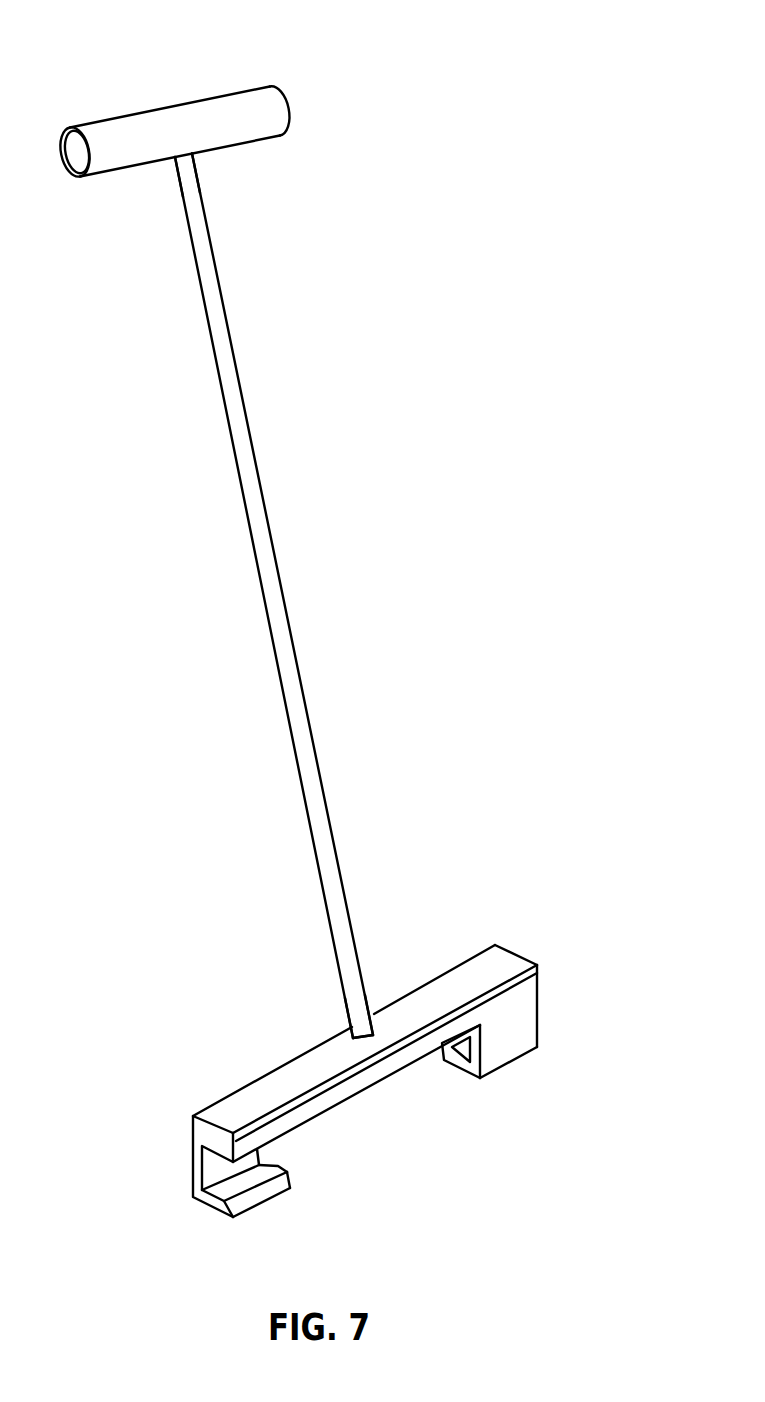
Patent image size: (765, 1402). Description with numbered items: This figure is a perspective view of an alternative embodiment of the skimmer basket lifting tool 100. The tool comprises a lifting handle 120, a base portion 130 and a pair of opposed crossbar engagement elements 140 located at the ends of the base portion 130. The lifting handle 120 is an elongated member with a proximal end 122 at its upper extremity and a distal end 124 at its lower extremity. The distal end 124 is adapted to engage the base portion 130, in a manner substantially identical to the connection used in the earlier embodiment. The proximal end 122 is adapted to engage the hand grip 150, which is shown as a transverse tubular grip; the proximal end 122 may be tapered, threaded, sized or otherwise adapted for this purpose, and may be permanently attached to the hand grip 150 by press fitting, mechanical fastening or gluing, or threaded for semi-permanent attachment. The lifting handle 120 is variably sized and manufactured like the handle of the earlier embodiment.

The skimmer basket lifting tool 100 is at (397, 504).
The hand grip 150 is at (124, 137).
The lifting handle 120 is at (285, 642).
The proximal end 122 is at (188, 163).
The distal end 124 is at (363, 1015).
The base portion 130 is at (451, 987).
The crossbar engagement elements 140 is at (474, 1112).